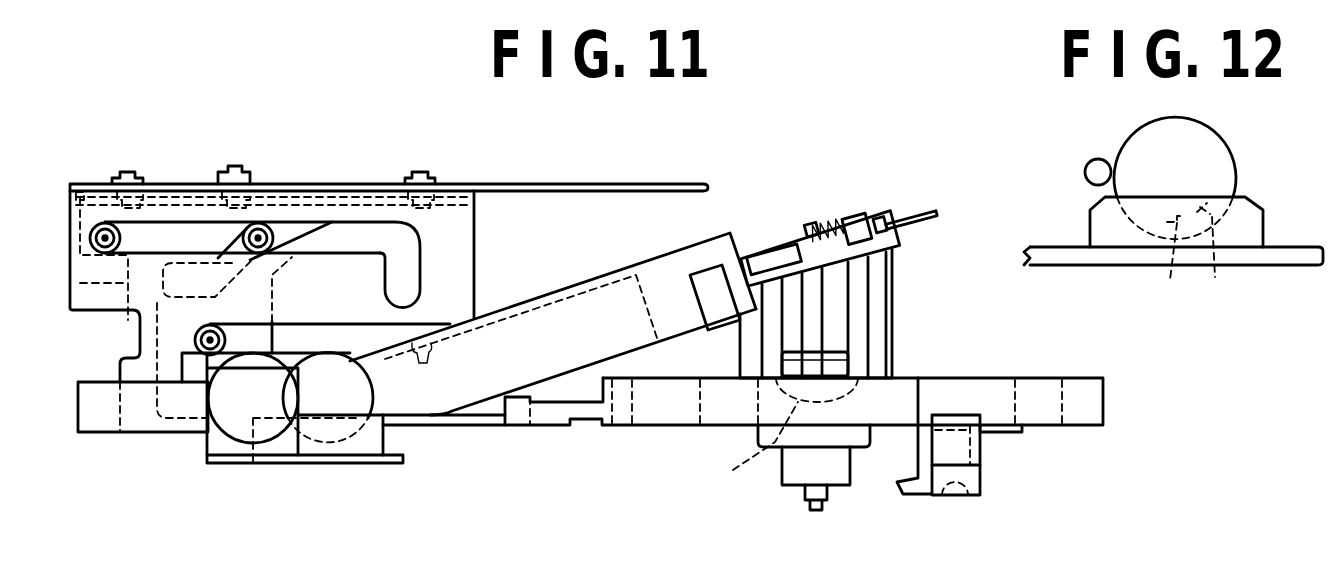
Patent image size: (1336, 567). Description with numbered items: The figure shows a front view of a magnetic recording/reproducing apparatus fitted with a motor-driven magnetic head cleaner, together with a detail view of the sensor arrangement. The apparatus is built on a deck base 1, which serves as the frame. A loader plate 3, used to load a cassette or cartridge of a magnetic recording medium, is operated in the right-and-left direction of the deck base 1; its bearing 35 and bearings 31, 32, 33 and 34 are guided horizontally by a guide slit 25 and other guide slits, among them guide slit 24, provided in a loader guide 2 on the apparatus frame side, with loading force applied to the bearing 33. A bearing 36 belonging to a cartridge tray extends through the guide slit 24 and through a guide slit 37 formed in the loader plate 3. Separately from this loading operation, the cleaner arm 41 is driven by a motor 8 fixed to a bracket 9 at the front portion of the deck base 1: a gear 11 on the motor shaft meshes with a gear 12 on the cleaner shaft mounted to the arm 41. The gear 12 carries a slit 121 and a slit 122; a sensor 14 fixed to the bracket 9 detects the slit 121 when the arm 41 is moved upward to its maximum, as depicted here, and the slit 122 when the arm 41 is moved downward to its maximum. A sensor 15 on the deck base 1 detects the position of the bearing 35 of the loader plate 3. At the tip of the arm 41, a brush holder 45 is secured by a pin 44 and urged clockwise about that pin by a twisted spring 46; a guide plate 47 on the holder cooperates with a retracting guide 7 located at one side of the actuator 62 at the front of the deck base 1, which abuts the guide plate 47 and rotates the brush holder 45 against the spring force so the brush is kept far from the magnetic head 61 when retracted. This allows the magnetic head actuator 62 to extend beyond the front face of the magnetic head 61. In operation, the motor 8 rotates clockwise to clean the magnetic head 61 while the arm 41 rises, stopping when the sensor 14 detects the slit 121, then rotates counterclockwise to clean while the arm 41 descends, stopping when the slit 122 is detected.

In FIG. 11, the deck base 1 is at (1083, 378).
In FIG. 11, the loader guide 2 is at (598, 184).
In FIG. 11, the loader plate 3 is at (80, 284).
In FIG. 11, the retracting guide 7 is at (982, 476).
In FIG. 11, the motor 8 is at (227, 403).
In FIG. 11, the bracket 9 is at (272, 452).
In FIG. 12, the bracket 9 is at (1048, 247).
In FIG. 12, the gear 11 is at (1089, 164).
In FIG. 11, the gear 12 is at (330, 397).
In FIG. 12, the gear 12 is at (1235, 150).
In FIG. 11, the sensor 14 is at (385, 437).
In FIG. 12, the sensor 14 is at (1268, 222).
In FIG. 11, the sensor 15 is at (182, 370).
In FIG. 11, the guide slit 24 is at (410, 243).
In FIG. 11, the guide slit 25 is at (333, 327).
In FIG. 11, the bearing 31 is at (128, 172).
In FIG. 11, the bearing 32 is at (420, 172).
In FIG. 11, the bearing 33 is at (236, 166).
In FIG. 11, the bearing 34 is at (90, 238).
In FIG. 11, the bearing 35 is at (195, 341).
In FIG. 11, the bearing 36 is at (283, 223).
In FIG. 11, the guide slit 37 is at (220, 256).
In FIG. 11, the arm 41 is at (503, 380).
In FIG. 11, the pin 44 is at (821, 228).
In FIG. 11, the brush holder 45 is at (760, 250).
In FIG. 11, the twisted spring 46 is at (822, 236).
In FIG. 11, the guide plate 47 is at (935, 213).
In FIG. 11, the magnetic head 61 is at (820, 323).
In FIG. 11, the magnetic head actuator 62 is at (784, 444).
In FIG. 12, the slit 121 is at (1175, 264).
In FIG. 12, the slit 122 is at (1227, 255).